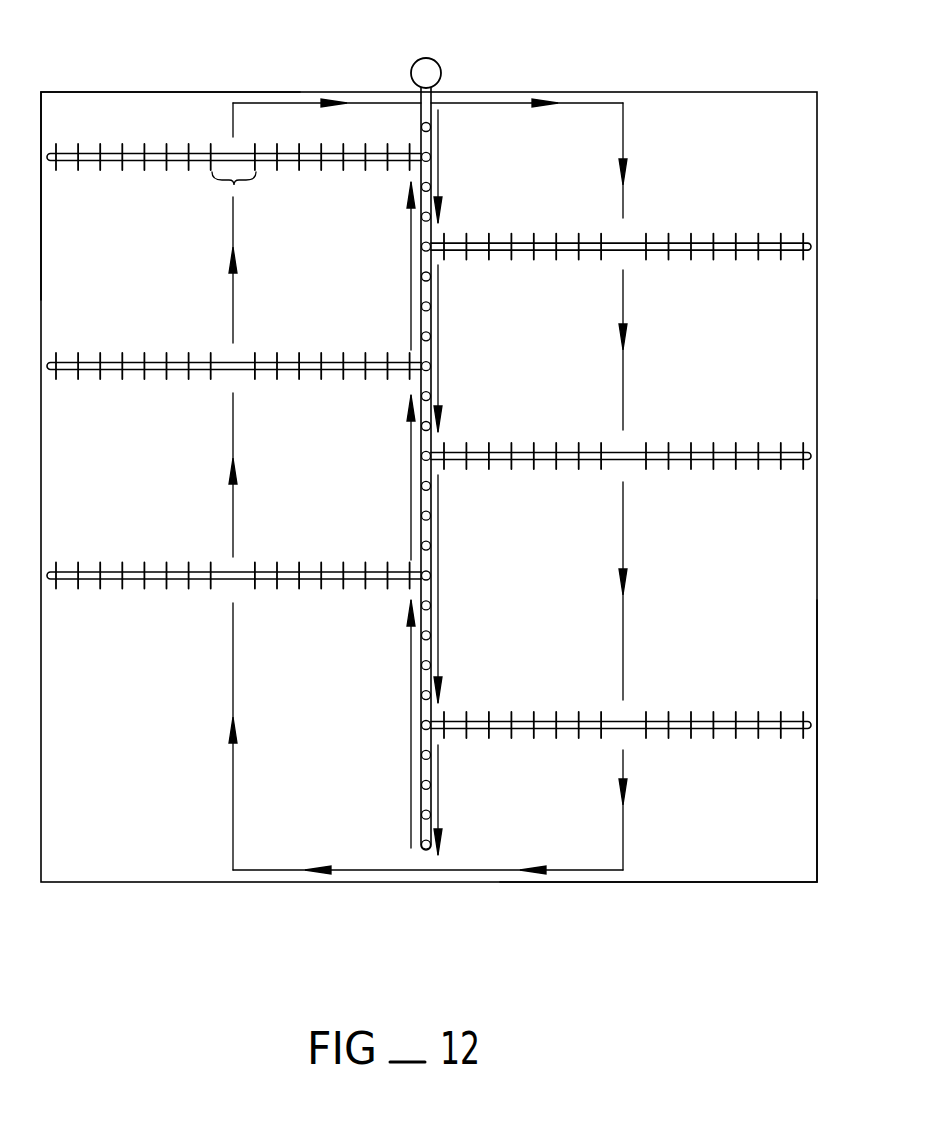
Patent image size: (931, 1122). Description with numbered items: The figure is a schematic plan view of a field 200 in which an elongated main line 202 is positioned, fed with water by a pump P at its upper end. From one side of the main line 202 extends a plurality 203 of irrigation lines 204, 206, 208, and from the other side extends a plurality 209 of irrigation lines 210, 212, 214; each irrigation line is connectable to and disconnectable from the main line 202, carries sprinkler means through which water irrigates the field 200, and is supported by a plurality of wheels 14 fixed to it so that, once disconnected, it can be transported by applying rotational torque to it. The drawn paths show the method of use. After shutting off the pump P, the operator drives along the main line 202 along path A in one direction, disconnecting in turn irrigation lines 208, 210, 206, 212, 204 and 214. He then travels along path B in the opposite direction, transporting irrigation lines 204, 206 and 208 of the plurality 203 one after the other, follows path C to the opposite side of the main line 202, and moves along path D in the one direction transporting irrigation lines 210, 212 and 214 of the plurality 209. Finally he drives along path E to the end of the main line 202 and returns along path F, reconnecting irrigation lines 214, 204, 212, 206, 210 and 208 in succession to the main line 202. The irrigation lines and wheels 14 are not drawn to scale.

The wheels 14 is at (100, 170).
The field 200 is at (153, 753).
The main line 202 is at (432, 595).
The plurality of irrigation lines 203 is at (768, 854).
The irrigation line 204 is at (725, 286).
The irrigation line 206 is at (729, 499).
The irrigation line 208 is at (724, 765).
The plurality of irrigation lines 209 is at (104, 98).
The irrigation line 210 is at (325, 614).
The irrigation line 212 is at (324, 408).
The irrigation line 214 is at (320, 198).
The path A is at (412, 688).
The path B is at (624, 142).
The path C is at (453, 875).
The path D is at (235, 757).
The path E is at (290, 103).
The path F is at (440, 358).
The pump P is at (426, 73).